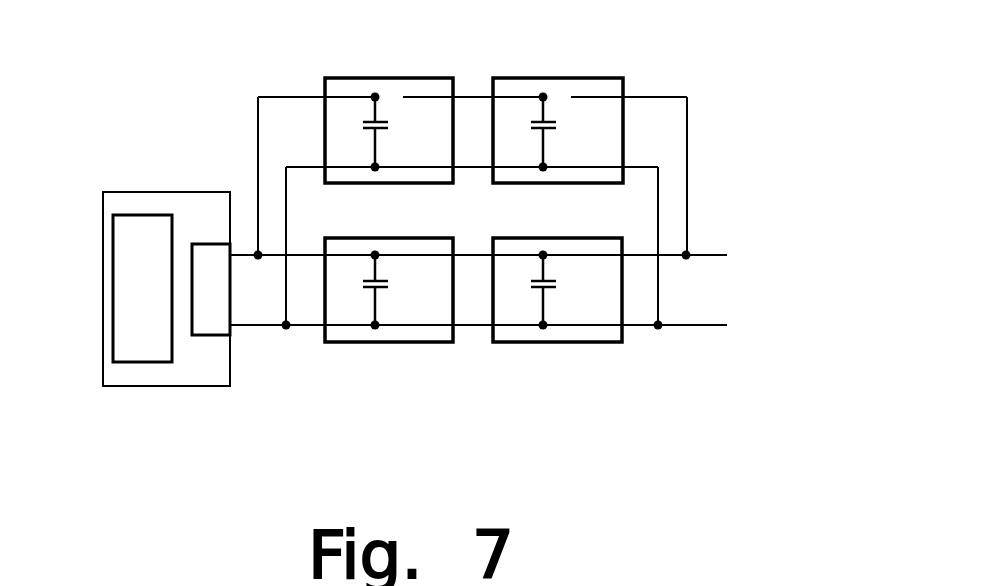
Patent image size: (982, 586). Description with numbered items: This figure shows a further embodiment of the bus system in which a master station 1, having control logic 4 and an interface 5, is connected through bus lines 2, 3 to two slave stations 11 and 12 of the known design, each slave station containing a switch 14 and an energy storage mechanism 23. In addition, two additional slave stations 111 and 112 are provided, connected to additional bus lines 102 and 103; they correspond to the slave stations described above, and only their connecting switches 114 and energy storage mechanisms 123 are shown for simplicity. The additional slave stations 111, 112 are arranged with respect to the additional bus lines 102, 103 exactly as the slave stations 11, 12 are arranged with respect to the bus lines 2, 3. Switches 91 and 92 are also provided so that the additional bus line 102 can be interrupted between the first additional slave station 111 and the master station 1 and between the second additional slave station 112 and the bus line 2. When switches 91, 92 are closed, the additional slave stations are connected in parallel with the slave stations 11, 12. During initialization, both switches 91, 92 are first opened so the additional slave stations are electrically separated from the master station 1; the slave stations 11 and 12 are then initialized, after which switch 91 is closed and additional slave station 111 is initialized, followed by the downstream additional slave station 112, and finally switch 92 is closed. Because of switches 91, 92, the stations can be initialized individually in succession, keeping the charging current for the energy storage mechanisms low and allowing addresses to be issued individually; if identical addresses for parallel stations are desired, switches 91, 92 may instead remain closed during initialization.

The master station 1 is at (140, 192).
The control logic 4 is at (124, 272).
The interface 5 is at (210, 325).
The bus line 2 is at (713, 253).
The bus line 3 is at (470, 328).
The slave station 11 is at (425, 345).
The slave station 12 is at (593, 345).
The switch 14 is at (398, 250).
The energy storage mechanism 23 is at (368, 290).
The switch 91 is at (258, 143).
The switch 92 is at (690, 160).
The additional bus line 102 is at (258, 104).
The additional bus line 103 is at (286, 195).
The additional slave station 111 is at (335, 78).
The additional slave station 112 is at (503, 78).
The connecting switch 114 is at (400, 95).
The energy storage mechanism 123 is at (366, 128).